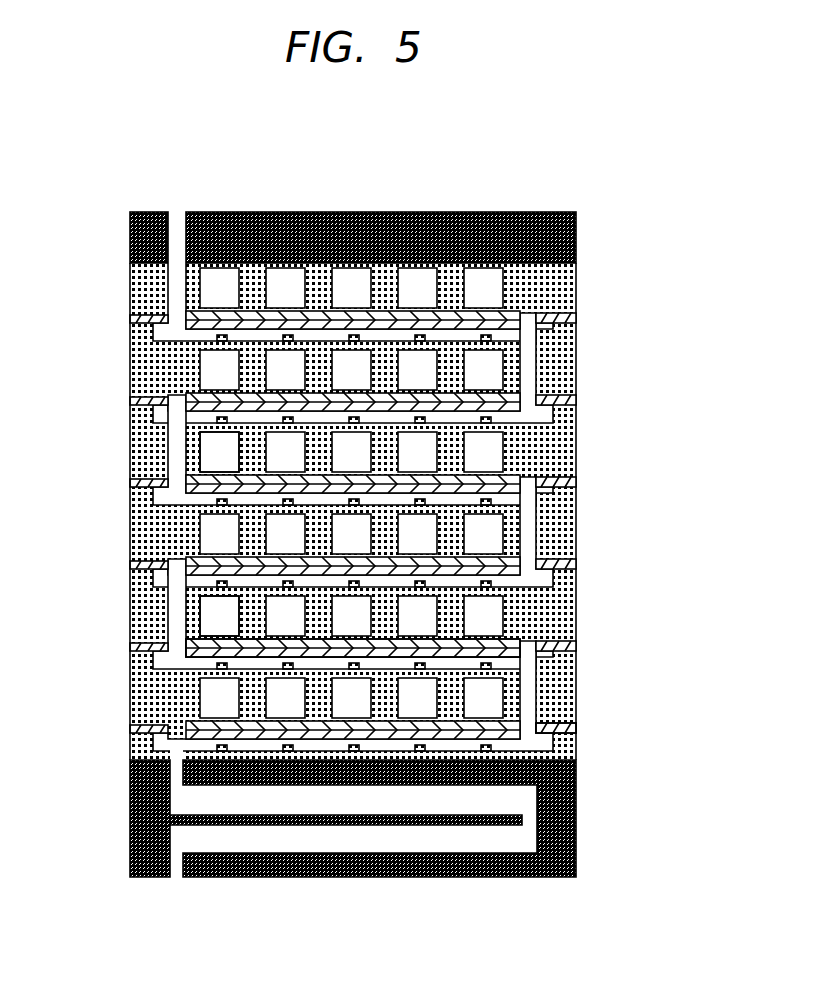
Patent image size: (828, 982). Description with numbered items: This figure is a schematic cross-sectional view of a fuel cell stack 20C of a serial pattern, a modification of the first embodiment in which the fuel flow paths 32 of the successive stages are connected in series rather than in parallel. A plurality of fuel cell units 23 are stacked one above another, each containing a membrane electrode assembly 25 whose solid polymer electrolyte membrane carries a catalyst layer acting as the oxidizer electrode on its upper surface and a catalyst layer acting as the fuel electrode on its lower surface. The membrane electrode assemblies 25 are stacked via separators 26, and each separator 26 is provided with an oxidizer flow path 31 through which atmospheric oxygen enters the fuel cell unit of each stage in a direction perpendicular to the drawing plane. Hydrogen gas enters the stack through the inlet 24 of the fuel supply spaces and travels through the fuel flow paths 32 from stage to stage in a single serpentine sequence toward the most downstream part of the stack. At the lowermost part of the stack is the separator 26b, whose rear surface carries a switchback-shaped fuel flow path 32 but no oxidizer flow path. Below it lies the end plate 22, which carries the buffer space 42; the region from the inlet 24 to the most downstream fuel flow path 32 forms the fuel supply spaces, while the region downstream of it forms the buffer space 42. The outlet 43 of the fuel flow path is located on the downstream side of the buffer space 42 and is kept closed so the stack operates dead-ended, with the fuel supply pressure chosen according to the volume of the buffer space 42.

The fuel cell stack 20C is at (565, 180).
The end plate 22 is at (130, 833).
The fuel cell units 23 is at (140, 603).
The inlet of the fuel supply spaces 24 is at (173, 211).
The membrane electrode assembly 25 is at (422, 641).
The separator 26 is at (563, 361).
The separator 26b is at (577, 742).
The oxidizer flow path 31 is at (210, 450).
The fuel flow path 32 is at (256, 582).
The buffer space 42 is at (490, 829).
The outlet of the fuel flow path 43 is at (176, 878).